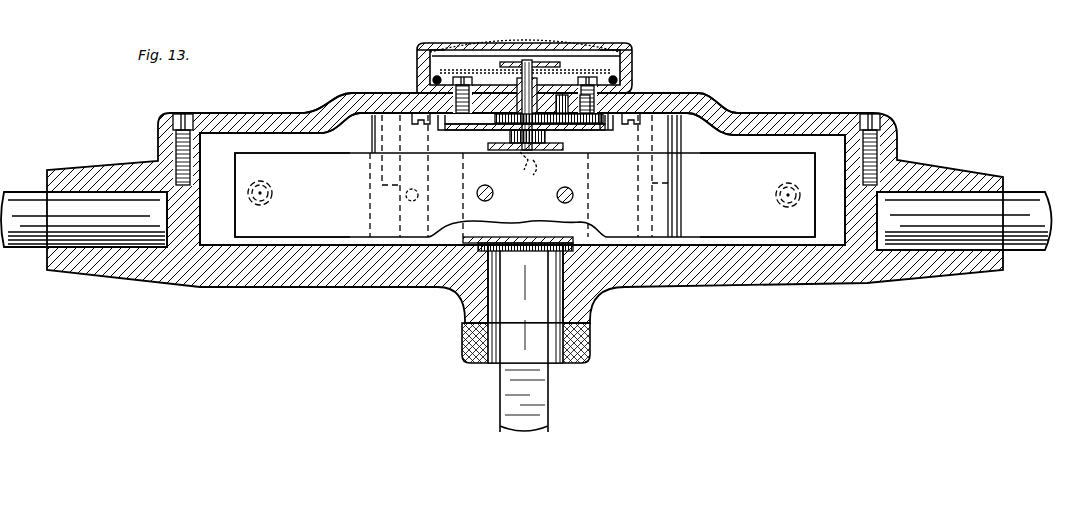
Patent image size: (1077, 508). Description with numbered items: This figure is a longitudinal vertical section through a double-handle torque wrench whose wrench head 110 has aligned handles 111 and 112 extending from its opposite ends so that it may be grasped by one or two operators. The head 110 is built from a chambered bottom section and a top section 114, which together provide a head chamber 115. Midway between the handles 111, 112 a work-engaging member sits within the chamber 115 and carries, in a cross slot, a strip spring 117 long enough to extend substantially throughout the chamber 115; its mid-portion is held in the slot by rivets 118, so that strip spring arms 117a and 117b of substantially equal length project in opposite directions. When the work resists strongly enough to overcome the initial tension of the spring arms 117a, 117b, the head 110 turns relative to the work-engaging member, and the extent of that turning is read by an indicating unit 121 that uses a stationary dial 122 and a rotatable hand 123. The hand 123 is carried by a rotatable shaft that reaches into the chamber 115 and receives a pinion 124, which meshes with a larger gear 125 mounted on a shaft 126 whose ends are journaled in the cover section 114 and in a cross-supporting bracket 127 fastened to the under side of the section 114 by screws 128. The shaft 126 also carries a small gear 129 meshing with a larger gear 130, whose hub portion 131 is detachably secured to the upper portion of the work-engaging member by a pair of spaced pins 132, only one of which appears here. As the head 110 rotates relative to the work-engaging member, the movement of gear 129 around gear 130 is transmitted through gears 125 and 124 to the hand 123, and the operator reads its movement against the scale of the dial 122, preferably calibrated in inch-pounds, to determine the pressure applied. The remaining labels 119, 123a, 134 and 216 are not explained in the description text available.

The wrench head 110 is at (909, 139).
The handle 111 is at (1020, 194).
The handle 112 is at (84, 219).
The top section 114 is at (290, 115).
The head chamber 115 is at (788, 140).
The strip spring 117 is at (529, 213).
The strip spring arm 117a is at (757, 195).
The strip spring arm 117b is at (292, 195).
The rivets 118 is at (477, 198).
The hole 119 is at (777, 189).
The indicating unit 121 is at (666, 46).
The stationary dial 122 is at (447, 70).
The rotatable hand 123 is at (541, 62).
The pointer shaft 123a is at (521, 62).
The pinion 124 is at (508, 151).
The larger gear 125 is at (625, 106).
The shaft 126 is at (571, 110).
The cross-supporting bracket 127 is at (608, 131).
The screws 128 is at (428, 110).
The small gear 129 is at (582, 135).
The larger gear 130 is at (490, 131).
The hub portion 131 is at (524, 152).
The pins 132 is at (536, 179).
The slot 134 is at (400, 203).
The hub nut 216 is at (585, 253).